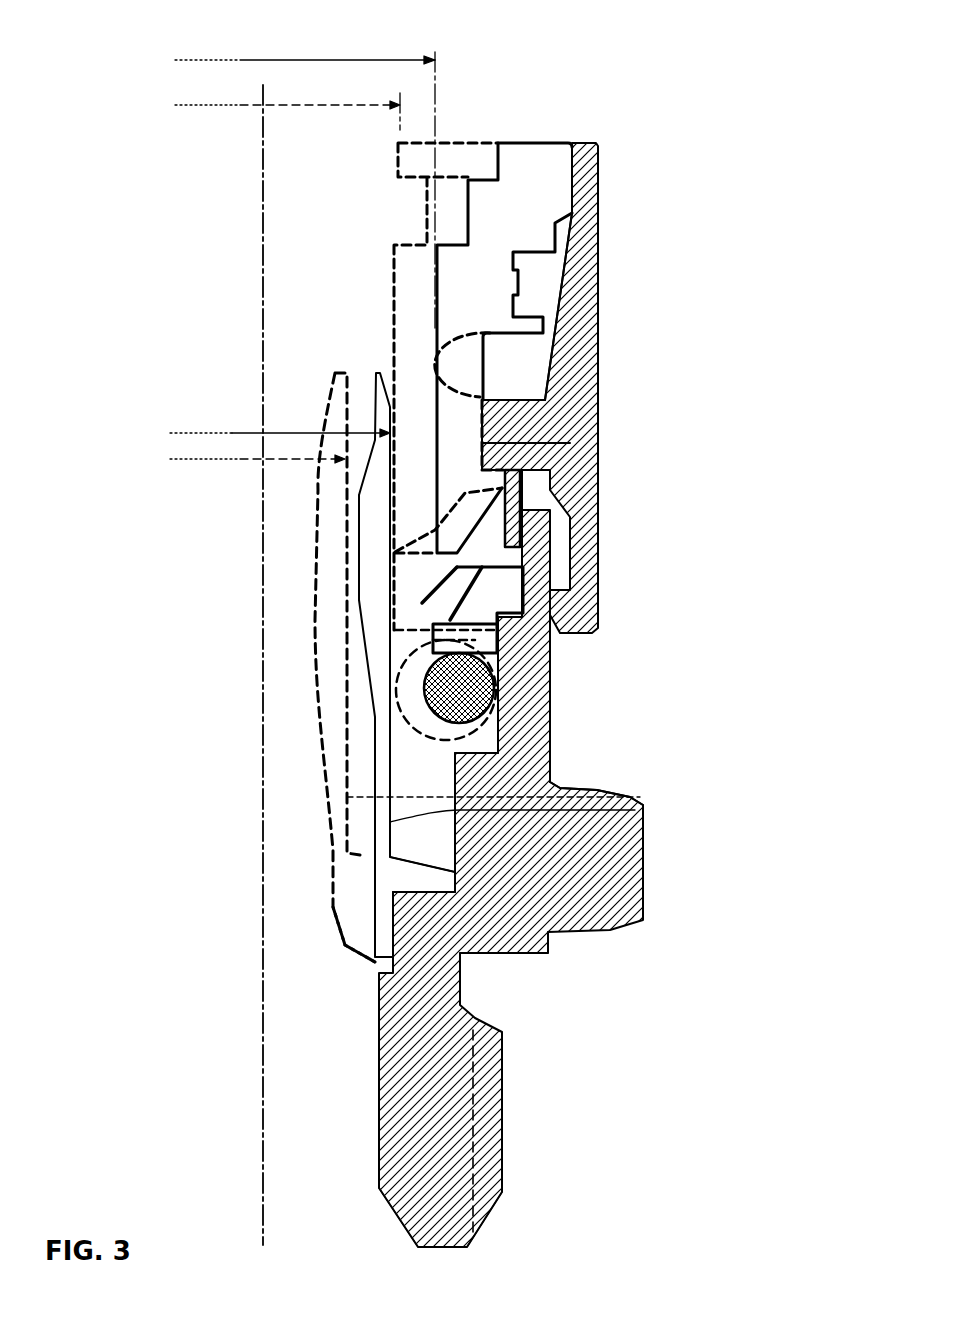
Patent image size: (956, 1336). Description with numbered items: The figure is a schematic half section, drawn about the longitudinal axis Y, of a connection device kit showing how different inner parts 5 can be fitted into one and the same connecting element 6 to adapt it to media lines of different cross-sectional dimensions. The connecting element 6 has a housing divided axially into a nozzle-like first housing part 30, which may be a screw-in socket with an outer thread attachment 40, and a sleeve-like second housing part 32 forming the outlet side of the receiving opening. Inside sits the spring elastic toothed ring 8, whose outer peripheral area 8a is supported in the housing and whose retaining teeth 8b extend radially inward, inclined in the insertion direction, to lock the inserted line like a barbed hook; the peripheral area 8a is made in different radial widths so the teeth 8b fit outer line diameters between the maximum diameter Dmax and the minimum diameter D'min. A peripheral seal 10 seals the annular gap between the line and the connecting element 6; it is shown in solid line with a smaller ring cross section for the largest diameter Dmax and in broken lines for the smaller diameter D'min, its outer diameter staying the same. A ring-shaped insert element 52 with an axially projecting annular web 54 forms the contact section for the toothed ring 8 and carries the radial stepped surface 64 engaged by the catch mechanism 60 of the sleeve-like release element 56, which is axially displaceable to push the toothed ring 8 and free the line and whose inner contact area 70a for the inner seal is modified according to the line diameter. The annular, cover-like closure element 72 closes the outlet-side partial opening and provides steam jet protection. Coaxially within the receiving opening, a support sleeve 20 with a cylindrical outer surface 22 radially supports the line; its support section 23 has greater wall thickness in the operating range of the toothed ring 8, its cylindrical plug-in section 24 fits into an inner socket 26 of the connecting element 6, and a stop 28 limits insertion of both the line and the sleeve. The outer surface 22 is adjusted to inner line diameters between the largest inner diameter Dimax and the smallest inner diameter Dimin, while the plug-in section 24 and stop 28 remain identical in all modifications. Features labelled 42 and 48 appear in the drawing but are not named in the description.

The inner parts 5 is at (320, 423).
The connecting element 6 is at (585, 328).
The toothed ring 8 is at (487, 550).
The outer peripheral area 8a is at (480, 566).
The retaining teeth 8b is at (462, 566).
The peripheral seal 10 is at (423, 735).
The support sleeve 20 is at (373, 753).
The cylindrical outer surface 22 is at (640, 797).
The support section 23 is at (373, 623).
The cylindrical plug-in section 24 is at (382, 923).
The inner socket 26 is at (390, 972).
The stop 28 is at (427, 880).
The first housing part 30 is at (450, 957).
The second housing part 32 is at (578, 375).
The outer thread attachment 40 is at (487, 1122).
The groove 42 is at (513, 622).
The step 48 is at (467, 752).
The insert element 52 is at (497, 467).
The annular web 54 is at (510, 535).
The release element 56 is at (437, 322).
The catch mechanism 60 is at (470, 467).
The stepped surface 64 is at (503, 488).
The inner contact area 70a is at (470, 213).
The closure element 72 is at (457, 157).
The longitudinal axis Y is at (262, 1160).
The maximum outer line diameter Dmax is at (240, 60).
The minimum outer line diameter D'min is at (287, 127).
The largest inner line diameter Dimax is at (232, 433).
The smallest inner line diameter Dimin is at (237, 459).